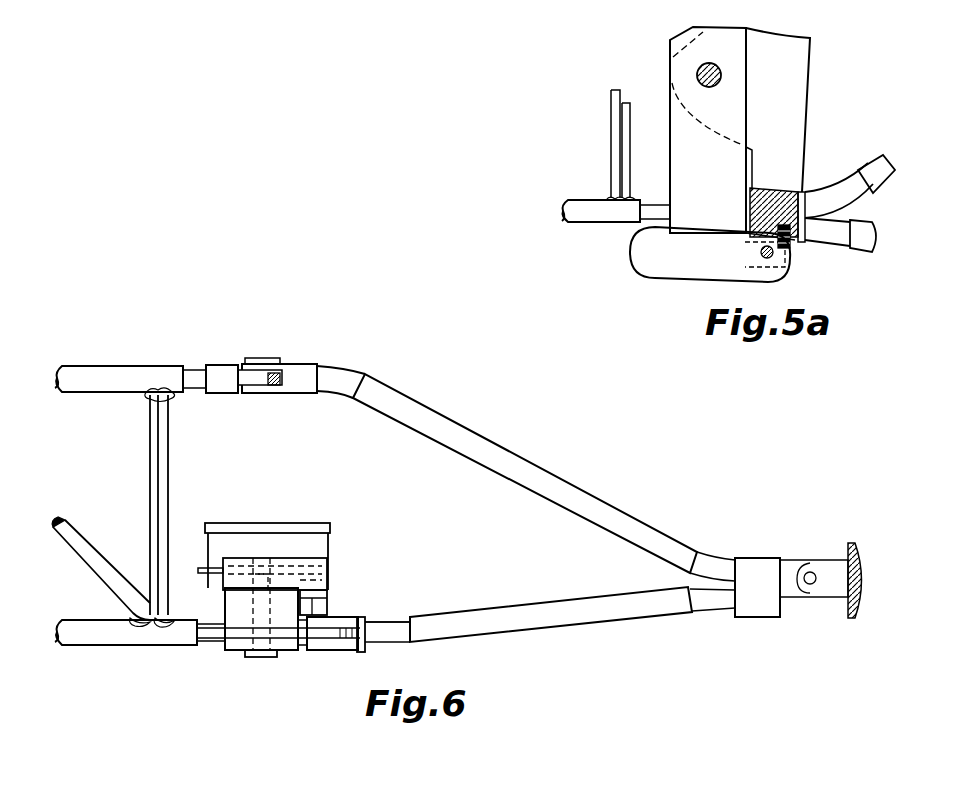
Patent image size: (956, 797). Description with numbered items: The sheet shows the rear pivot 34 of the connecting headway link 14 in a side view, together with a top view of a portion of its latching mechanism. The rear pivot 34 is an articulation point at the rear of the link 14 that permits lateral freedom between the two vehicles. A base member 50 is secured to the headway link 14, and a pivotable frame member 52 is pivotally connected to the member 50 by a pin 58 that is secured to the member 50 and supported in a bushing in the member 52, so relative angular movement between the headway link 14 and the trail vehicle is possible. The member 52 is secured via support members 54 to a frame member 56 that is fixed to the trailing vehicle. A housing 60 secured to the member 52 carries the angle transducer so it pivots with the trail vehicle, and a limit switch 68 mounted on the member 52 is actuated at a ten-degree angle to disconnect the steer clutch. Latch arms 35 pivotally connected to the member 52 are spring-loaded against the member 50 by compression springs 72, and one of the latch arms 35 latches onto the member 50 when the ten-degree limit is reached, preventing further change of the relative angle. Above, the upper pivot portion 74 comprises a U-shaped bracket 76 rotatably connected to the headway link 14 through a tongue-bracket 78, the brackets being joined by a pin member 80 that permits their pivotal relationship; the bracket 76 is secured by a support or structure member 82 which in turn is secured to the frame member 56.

In FIG. 6, the headway link 14 is at (96, 371).
In FIG. 5A, the headway link 14 is at (564, 203).
In FIG. 6, the rear pivot 34 is at (214, 653).
In FIG. 6, the latch arms 35 is at (326, 631).
In FIG. 5A, the latch arms 35 is at (633, 249).
In FIG. 6, the base member 50 is at (236, 620).
In FIG. 5A, the base member 50 is at (678, 138).
In FIG. 6, the pivotable frame member 52 is at (327, 646).
In FIG. 5A, the pivotable frame member 52 is at (790, 83).
In FIG. 6, the support members 54 is at (610, 612).
In FIG. 5A, the support members 54 is at (860, 231).
In FIG. 6, the frame member 56 is at (762, 563).
In FIG. 6, the pin 58 is at (270, 658).
In FIG. 5A, the pin 58 is at (697, 73).
In FIG. 6, the housing 60 is at (327, 572).
In FIG. 6, the limit switch 68 is at (330, 610).
In FIG. 5A, the compression springs 72 is at (796, 246).
In FIG. 6, the upper pivot portion 74 is at (308, 355).
In FIG. 6, the U-shaped bracket 76 is at (318, 368).
In FIG. 6, the tongue-bracket 78 is at (215, 374).
In FIG. 6, the pin member 80 is at (272, 359).
In FIG. 6, the support or structure member 82 is at (500, 453).